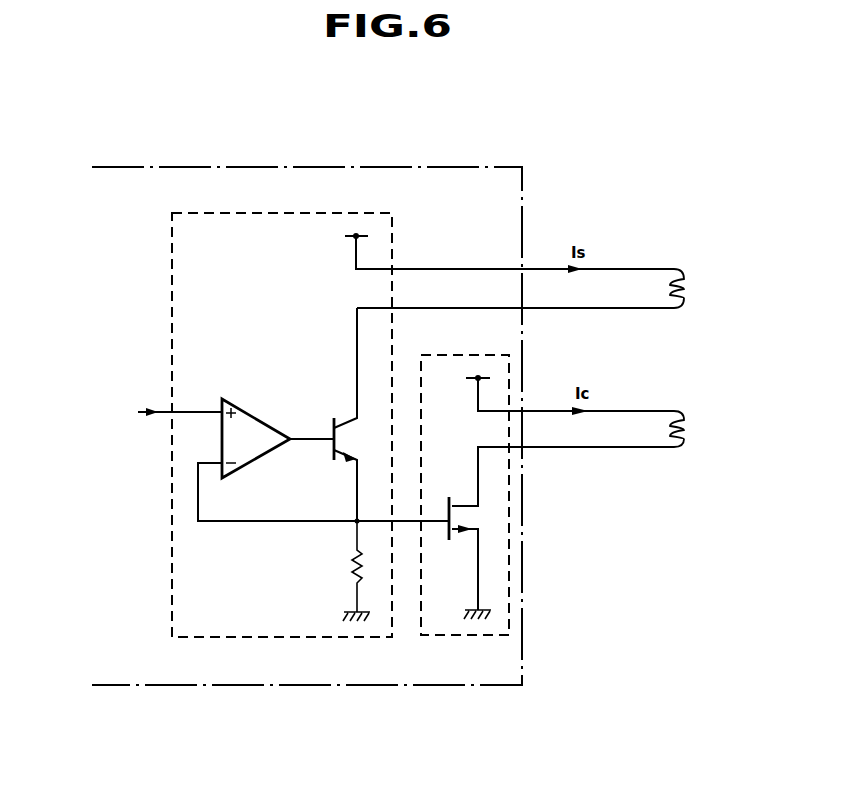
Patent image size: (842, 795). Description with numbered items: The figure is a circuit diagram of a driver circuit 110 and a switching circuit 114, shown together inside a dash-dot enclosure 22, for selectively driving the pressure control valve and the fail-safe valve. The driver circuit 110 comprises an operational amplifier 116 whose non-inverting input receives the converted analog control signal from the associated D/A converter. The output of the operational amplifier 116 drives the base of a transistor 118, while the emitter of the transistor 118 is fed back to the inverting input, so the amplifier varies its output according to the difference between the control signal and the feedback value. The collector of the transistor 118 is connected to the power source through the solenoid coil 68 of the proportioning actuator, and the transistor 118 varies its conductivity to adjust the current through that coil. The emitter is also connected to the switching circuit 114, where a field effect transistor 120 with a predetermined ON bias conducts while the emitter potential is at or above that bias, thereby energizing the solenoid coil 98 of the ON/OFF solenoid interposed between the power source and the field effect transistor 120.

The control circuit 22 is at (319, 165).
The driver circuit 110 is at (284, 639).
The switching circuit 114 is at (496, 637).
The operational amplifier 116 is at (250, 412).
The transistor 118 is at (331, 420).
The field effect transistor 120 is at (473, 518).
The solenoid coil 68 is at (686, 289).
The solenoid coil 98 is at (688, 430).